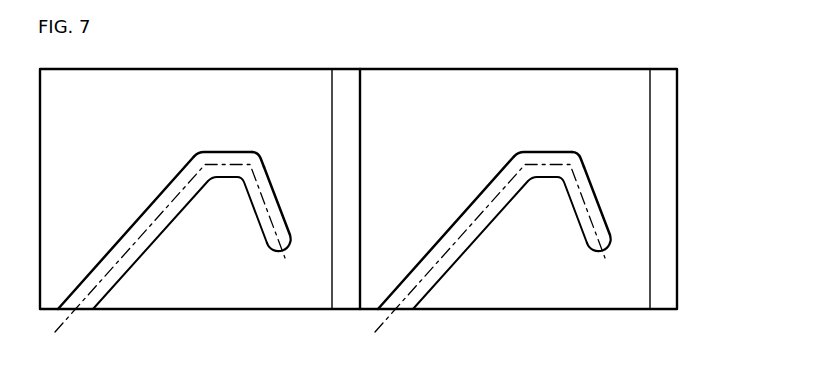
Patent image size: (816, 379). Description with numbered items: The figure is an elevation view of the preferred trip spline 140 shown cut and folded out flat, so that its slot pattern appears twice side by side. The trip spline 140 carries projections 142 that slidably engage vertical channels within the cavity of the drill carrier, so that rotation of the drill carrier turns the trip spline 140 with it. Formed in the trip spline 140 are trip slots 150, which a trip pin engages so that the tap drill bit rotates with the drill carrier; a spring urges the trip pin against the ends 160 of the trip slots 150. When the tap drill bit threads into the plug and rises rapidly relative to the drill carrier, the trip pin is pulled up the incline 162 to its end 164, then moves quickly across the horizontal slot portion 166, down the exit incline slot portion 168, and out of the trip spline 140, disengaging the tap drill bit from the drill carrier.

The trip spline 140 is at (244, 60).
The projections 142 is at (347, 77).
The trip slots 150 is at (116, 289).
The ends of trip slots 160 is at (277, 249).
The incline 162 is at (273, 190).
The end of incline 164 is at (258, 152).
The horizontal slot portion 166 is at (228, 152).
The exit incline slot portion 168 is at (118, 240).